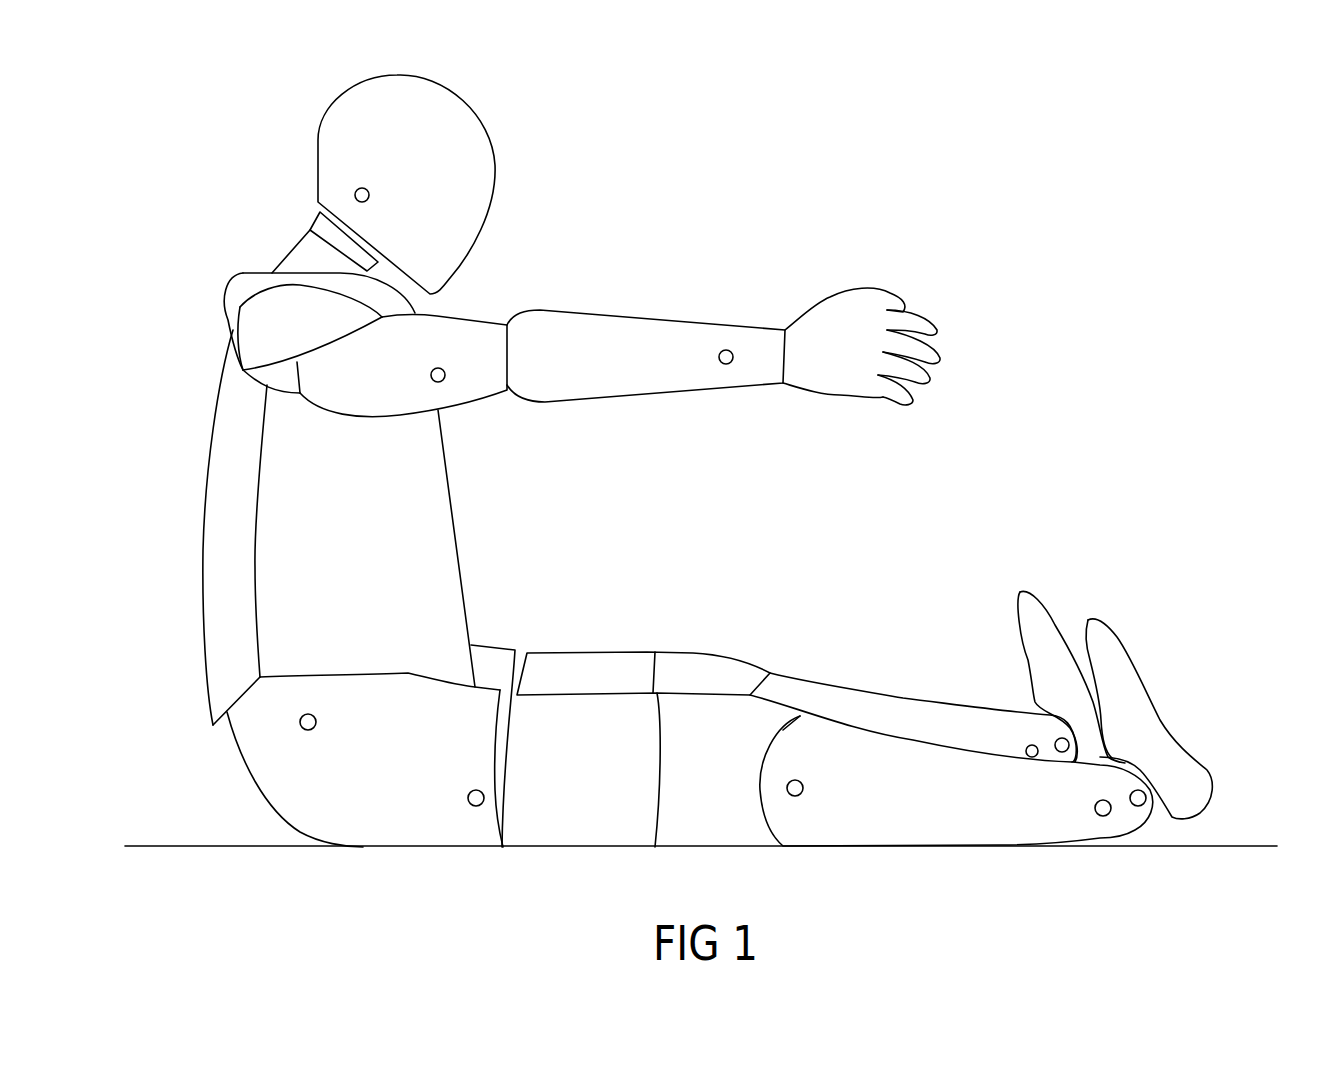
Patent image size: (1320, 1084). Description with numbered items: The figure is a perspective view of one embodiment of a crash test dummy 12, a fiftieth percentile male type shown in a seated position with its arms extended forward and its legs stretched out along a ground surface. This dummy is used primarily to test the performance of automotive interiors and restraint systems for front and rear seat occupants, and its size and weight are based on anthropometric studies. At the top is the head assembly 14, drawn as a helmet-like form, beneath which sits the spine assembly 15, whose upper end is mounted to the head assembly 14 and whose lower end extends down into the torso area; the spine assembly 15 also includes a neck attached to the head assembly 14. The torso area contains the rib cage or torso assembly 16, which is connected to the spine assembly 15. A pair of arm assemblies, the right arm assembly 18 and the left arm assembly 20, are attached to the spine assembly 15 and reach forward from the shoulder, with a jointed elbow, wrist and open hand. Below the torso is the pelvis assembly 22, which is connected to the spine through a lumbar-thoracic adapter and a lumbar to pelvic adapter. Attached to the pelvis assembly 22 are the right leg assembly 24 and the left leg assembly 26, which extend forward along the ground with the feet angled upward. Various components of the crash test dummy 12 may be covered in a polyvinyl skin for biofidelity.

The crash test dummy 12 is at (315, 157).
The head assembly 14 is at (478, 105).
The spine assembly 15 is at (320, 240).
The rib cage or torso assembly 16 is at (450, 476).
The right arm assembly 18 is at (474, 316).
The left arm assembly 20 is at (723, 346).
The pelvis assembly 22 is at (266, 805).
The right leg assembly 24 is at (916, 736).
The left leg assembly 26 is at (874, 690).